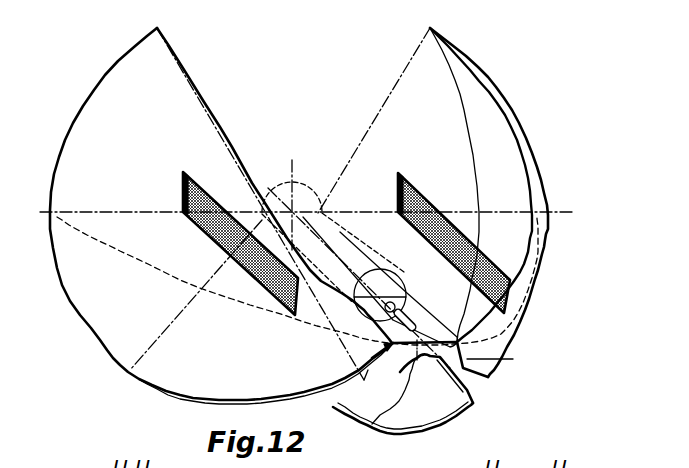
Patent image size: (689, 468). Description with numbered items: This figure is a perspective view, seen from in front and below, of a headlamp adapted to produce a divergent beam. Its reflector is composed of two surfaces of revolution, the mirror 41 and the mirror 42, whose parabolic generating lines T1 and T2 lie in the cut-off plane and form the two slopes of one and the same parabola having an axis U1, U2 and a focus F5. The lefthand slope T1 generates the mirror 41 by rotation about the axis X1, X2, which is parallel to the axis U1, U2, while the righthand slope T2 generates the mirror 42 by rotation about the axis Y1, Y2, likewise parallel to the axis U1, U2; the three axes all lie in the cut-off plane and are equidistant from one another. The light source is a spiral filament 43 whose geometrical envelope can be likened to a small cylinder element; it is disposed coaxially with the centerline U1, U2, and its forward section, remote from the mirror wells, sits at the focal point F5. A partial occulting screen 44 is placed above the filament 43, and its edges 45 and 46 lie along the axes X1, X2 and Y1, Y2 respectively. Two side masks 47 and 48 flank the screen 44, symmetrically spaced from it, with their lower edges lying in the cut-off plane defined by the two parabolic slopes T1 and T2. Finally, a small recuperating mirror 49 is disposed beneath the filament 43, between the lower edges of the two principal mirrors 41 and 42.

The mirror 41 is at (80, 290).
The mirror 42 is at (527, 253).
The spiral filament 43 is at (403, 282).
The partial occulting screen 44 is at (400, 334).
The edge of screen 45 is at (337, 333).
The edge of screen 46 is at (438, 305).
The side mask 47 is at (200, 228).
The side mask 48 is at (412, 193).
The recuperating mirror 49 is at (412, 425).
The parabolic generating line T1 is at (87, 233).
The parabolic generating line T2 is at (545, 237).
The axis of rotation X1 is at (263, 210).
The axis of rotation X2 is at (364, 388).
The axis of rotation Y1 is at (310, 200).
The axis of rotation Y2 is at (513, 359).
The parabola axis U1 is at (292, 205).
The parabola axis U2 is at (431, 367).
The focus F5 is at (368, 354).